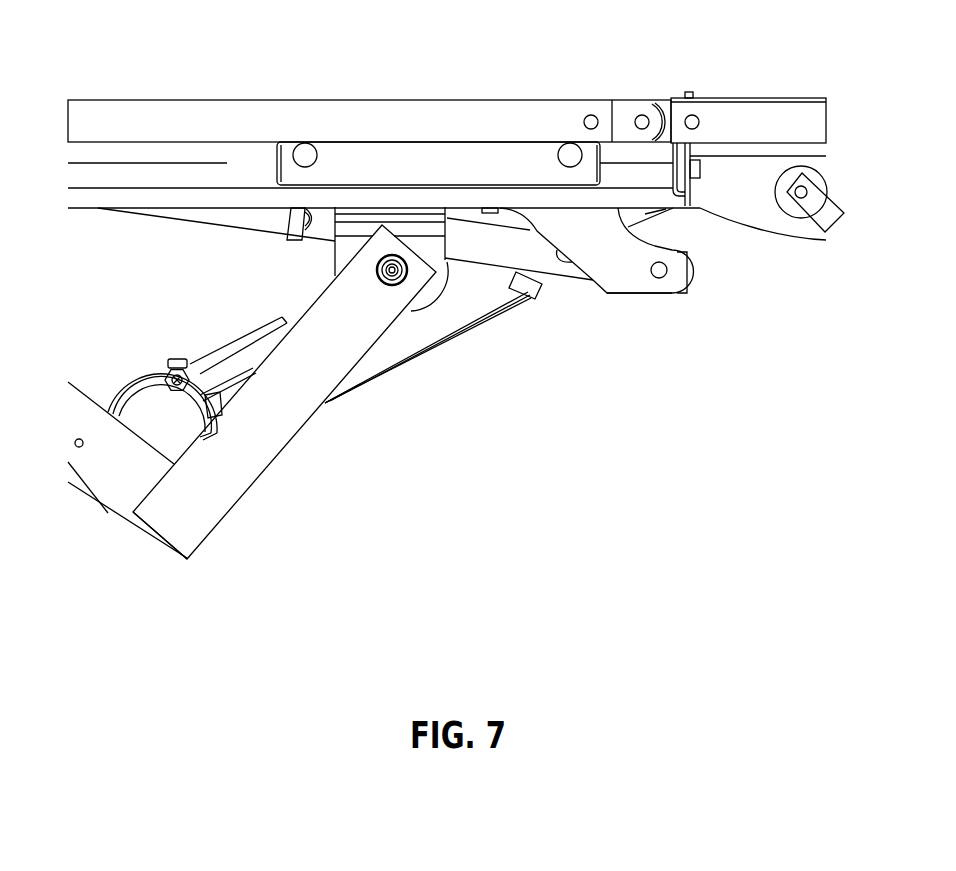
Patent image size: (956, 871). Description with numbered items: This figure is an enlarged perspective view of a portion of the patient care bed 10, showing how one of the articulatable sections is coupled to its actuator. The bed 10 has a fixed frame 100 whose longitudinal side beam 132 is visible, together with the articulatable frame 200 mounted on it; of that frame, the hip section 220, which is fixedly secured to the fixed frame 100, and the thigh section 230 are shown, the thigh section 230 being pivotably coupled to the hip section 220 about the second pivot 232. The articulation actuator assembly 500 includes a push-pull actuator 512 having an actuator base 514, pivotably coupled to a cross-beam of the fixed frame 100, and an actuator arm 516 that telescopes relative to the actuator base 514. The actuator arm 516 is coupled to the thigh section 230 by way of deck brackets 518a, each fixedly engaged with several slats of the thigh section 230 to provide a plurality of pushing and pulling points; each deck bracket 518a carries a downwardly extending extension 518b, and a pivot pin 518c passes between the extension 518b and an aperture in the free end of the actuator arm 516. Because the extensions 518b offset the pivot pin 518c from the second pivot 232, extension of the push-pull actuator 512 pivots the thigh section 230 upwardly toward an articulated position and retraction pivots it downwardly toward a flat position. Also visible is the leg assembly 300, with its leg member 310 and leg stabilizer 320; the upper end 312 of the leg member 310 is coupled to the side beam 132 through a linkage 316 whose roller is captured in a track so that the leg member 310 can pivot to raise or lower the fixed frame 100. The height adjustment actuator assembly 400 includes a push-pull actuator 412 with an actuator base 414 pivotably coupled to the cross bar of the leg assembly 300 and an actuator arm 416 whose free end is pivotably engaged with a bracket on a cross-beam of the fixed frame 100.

The patient care bed 10 is at (137, 28).
The fixed frame 100 is at (102, 178).
The longitudinal side beam 132 is at (97, 200).
The articulatable frame 200 is at (416, 94).
The hip section 220 is at (778, 122).
The thigh section 230 is at (246, 116).
The second pivot 232 is at (636, 104).
The leg assembly 300 is at (290, 426).
The leg member 310 is at (190, 518).
The upper end 312 is at (377, 304).
The linkage 316 is at (420, 306).
The leg stabilizer 320 is at (108, 473).
The height adjustment actuator assembly 400 is at (433, 369).
The push-pull actuator 412 is at (362, 386).
The actuator base 414 is at (484, 286).
The actuator arm 416 is at (660, 214).
The articulation actuator assembly 500 is at (623, 292).
The push-pull actuator 512 is at (174, 230).
The actuator base 514 is at (247, 218).
The actuator arm 516 is at (541, 256).
The deck bracket 518a is at (613, 300).
The extension 518b is at (638, 282).
The pivot pin 518c is at (664, 270).